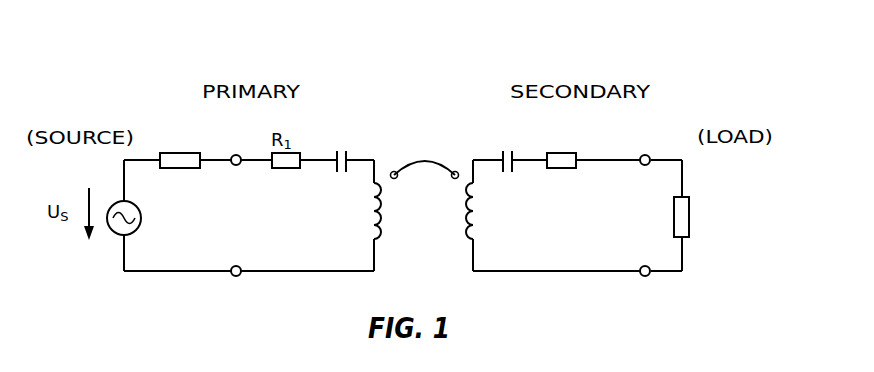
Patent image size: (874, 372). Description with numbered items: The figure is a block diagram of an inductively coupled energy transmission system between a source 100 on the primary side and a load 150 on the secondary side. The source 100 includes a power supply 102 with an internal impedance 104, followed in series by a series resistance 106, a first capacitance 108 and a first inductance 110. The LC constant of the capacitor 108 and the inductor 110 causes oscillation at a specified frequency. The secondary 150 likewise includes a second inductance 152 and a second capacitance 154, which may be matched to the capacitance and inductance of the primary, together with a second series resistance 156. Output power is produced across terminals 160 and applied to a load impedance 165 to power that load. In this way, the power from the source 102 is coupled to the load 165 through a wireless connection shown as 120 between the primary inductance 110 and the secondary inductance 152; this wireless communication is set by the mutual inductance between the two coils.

The source 100 is at (199, 149).
The power supply 102 is at (141, 227).
The internal impedance Zs 104 is at (186, 170).
The series resistance R4 106 is at (283, 170).
The capacitance C1 108 is at (344, 173).
The inductance L1 110 is at (377, 235).
The wireless connection 120 is at (425, 162).
The load 150 is at (613, 150).
The inductance L2 152 is at (473, 236).
The capacitance C2 154 is at (504, 173).
The series resistance R2 156 is at (563, 169).
The terminals 160 is at (642, 184).
The load ZL 165 is at (688, 238).